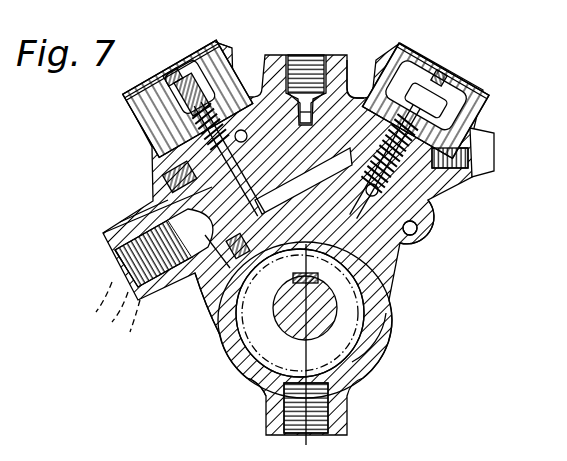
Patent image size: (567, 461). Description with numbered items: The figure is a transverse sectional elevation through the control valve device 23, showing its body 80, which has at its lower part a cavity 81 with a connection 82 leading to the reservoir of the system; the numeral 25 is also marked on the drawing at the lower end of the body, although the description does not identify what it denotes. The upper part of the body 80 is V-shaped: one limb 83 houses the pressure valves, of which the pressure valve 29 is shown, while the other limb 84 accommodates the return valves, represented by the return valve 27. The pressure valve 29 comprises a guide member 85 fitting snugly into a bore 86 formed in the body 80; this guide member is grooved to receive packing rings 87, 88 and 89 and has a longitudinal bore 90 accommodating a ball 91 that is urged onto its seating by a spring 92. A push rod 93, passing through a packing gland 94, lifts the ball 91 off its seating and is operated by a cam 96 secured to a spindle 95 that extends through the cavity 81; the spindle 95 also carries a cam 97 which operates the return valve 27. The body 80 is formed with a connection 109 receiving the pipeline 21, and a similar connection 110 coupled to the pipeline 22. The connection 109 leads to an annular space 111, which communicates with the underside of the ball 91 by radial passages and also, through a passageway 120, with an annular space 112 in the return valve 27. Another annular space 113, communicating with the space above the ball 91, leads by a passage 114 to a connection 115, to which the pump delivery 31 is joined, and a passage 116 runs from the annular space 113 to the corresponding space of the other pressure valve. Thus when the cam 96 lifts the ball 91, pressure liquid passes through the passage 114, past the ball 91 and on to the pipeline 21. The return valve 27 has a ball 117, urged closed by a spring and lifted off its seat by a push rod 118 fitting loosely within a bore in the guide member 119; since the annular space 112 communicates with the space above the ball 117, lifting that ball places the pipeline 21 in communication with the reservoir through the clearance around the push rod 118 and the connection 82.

The pipeline 21 is at (110, 286).
The pipeline 22 is at (124, 292).
The control valve device 23 is at (392, 322).
The center line 25 is at (322, 446).
The return valve 27 is at (425, 186).
The pressure valve 29 is at (194, 136).
The pump delivery 31 is at (306, 55).
The body 80 is at (396, 292).
The cavity 81 is at (290, 333).
The connection 82 is at (332, 412).
The limb 83 is at (158, 92).
The limb 84 is at (472, 92).
The guide member 85 is at (176, 176).
The bore 86 is at (178, 66).
The packing ring 87 is at (178, 112).
The packing ring 88 is at (182, 186).
The packing ring 89 is at (218, 268).
The longitudinal bore 90 is at (168, 76).
The ball 91 is at (170, 204).
The spring 92 is at (200, 150).
The push rod 93 is at (196, 288).
The packing gland 94 is at (246, 318).
The spindle 95 is at (272, 378).
The cam 96 is at (259, 325).
The cam 97 is at (343, 340).
The connection 109 is at (132, 262).
The connection 110 is at (138, 305).
The annular space 111 is at (230, 260).
The annular space 112 is at (415, 230).
The annular space 113 is at (226, 62).
The passage 114 is at (304, 112).
The connection 115 is at (342, 75).
The passage 116 is at (241, 130).
The ball 117 is at (398, 196).
The push rod 118 is at (404, 246).
The guide member 119 is at (494, 132).
The passageway 120 is at (372, 184).